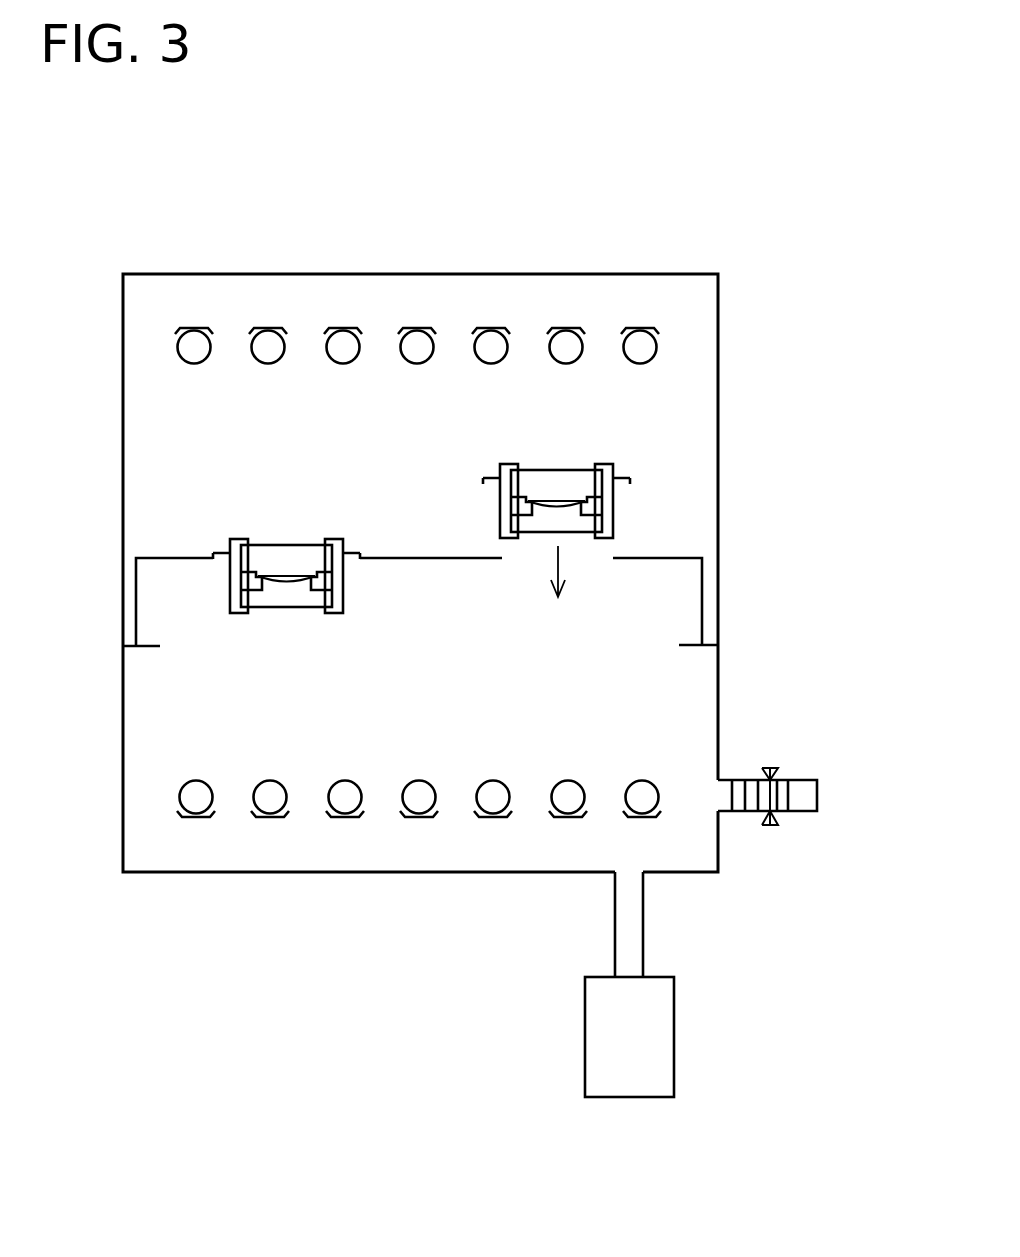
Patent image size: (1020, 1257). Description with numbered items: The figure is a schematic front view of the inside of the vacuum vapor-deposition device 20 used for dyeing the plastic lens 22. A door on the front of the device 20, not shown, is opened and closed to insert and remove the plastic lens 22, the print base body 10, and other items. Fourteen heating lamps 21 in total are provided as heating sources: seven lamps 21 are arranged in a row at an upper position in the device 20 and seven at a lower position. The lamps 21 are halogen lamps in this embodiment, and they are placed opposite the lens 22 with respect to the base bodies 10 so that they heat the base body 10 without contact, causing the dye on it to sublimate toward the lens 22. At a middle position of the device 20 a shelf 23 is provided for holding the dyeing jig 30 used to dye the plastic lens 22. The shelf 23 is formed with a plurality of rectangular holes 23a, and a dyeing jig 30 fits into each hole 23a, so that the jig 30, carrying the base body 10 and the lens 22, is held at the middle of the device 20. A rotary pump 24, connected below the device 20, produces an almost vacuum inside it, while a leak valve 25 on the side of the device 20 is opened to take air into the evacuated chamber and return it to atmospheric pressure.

The print base body 10 is at (270, 545).
The vacuum vapor-deposition device 20 is at (718, 375).
The heating lamps 21 is at (640, 346).
The plastic lens 22 is at (271, 580).
The shelf 23 is at (170, 555).
The rectangular holes 23a is at (595, 570).
The rotary pump 24 is at (602, 1038).
The leak valve 25 is at (805, 785).
The dyeing jig 30 is at (343, 519).